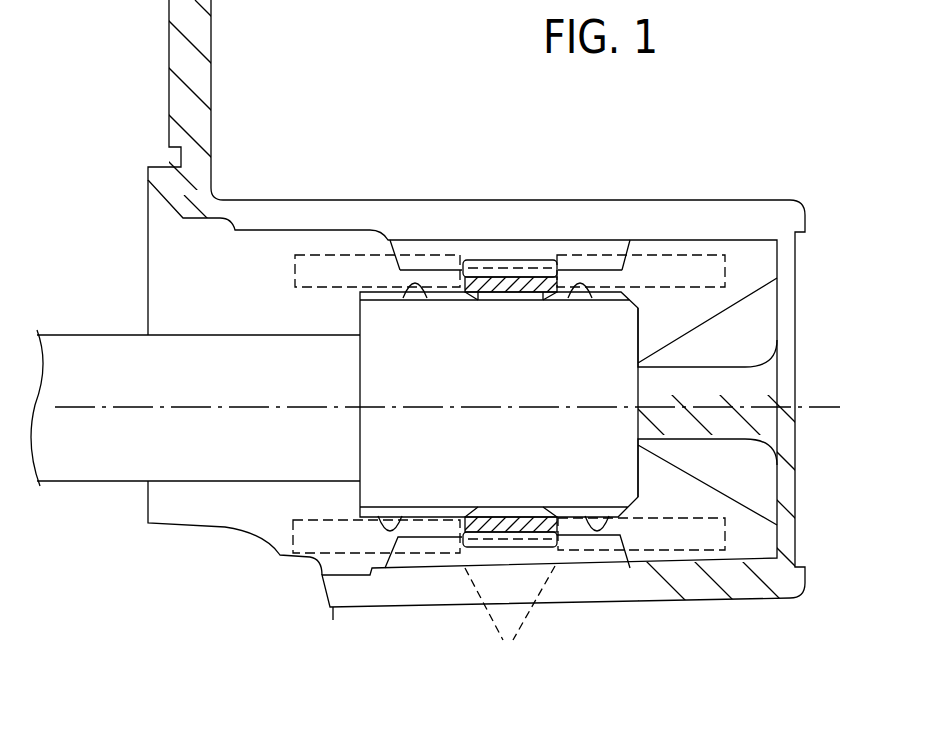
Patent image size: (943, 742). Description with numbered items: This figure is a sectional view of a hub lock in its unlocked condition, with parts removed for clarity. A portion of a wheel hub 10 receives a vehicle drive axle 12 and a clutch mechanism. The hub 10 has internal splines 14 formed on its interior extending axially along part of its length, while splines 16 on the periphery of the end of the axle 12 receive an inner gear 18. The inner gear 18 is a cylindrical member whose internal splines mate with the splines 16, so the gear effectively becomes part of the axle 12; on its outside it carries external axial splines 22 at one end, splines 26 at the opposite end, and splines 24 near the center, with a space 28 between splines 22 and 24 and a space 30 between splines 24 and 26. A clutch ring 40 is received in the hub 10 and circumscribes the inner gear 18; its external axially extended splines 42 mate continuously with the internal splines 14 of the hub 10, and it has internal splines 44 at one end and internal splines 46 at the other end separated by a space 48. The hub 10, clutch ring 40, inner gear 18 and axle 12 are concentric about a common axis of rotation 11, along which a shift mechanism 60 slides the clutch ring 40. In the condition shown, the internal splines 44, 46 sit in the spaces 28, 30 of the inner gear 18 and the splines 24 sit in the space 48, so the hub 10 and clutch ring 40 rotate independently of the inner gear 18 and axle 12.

The wheel hub 10 is at (598, 200).
The axis of rotation 11 is at (822, 400).
The vehicle drive axle 12 is at (100, 334).
The internal splines 14 is at (603, 248).
The splines 16 is at (638, 477).
The inner gear 18 is at (360, 490).
The external axial splines 22 is at (597, 517).
The external axial splines 24 is at (510, 510).
The external axial splines 26 is at (388, 522).
The space 28 is at (597, 300).
The space 30 is at (408, 296).
The clutch ring 40 is at (480, 260).
The external axially extended splines 42 is at (495, 262).
The internal splines 44 is at (543, 300).
The internal splines 46 is at (477, 300).
The space 48 is at (508, 287).
The shift mechanism 60 is at (510, 622).